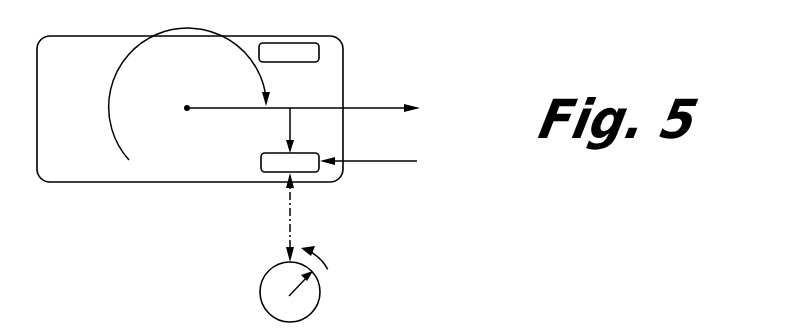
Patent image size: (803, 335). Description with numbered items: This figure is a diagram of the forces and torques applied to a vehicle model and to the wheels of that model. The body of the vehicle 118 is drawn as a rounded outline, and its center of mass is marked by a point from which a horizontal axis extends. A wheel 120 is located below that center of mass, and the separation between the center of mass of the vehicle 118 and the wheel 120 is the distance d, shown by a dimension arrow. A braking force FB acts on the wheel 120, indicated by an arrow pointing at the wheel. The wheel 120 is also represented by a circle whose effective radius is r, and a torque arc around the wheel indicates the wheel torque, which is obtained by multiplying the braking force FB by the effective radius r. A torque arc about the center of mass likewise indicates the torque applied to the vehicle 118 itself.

The vehicle 118 is at (183, 112).
The wheel 120 is at (262, 163).
The distance d is at (298, 130).
The effective radius of the wheel r is at (290, 292).
The braking force FB is at (381, 165).